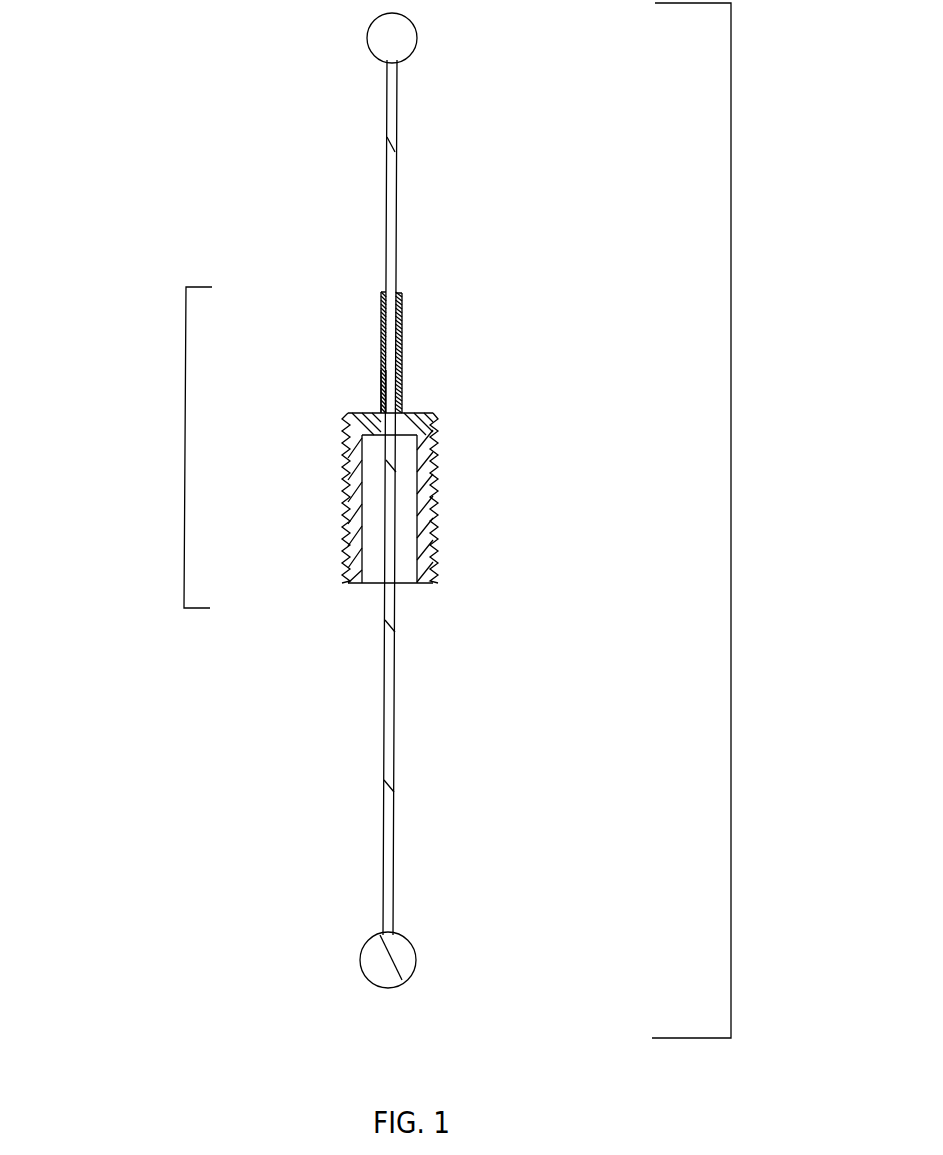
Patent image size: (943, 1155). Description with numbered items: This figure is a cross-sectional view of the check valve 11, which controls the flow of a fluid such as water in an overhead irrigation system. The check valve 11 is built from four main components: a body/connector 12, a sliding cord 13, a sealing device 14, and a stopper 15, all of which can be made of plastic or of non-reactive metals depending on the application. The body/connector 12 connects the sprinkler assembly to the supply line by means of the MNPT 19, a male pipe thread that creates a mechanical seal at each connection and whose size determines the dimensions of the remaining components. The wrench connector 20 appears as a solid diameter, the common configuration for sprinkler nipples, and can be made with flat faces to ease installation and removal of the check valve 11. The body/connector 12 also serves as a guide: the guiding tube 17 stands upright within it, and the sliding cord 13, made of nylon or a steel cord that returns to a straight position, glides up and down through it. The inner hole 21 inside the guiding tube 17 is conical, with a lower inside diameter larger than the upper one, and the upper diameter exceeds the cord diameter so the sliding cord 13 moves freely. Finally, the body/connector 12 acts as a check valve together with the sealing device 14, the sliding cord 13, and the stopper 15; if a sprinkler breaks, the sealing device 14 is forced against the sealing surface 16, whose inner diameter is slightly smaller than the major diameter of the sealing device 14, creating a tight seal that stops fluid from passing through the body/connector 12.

The check valve 11 is at (761, 520).
The body/connector 12 is at (128, 447).
The sliding cord 13 is at (475, 497).
The sealing device 14 is at (480, 960).
The stopper 15 is at (455, 65).
The sealing surface 16 is at (449, 533).
The guiding tube 17 is at (469, 352).
The MNPT 19 is at (339, 498).
The wrench connector 20 is at (480, 506).
The inner hole 21 is at (335, 372).